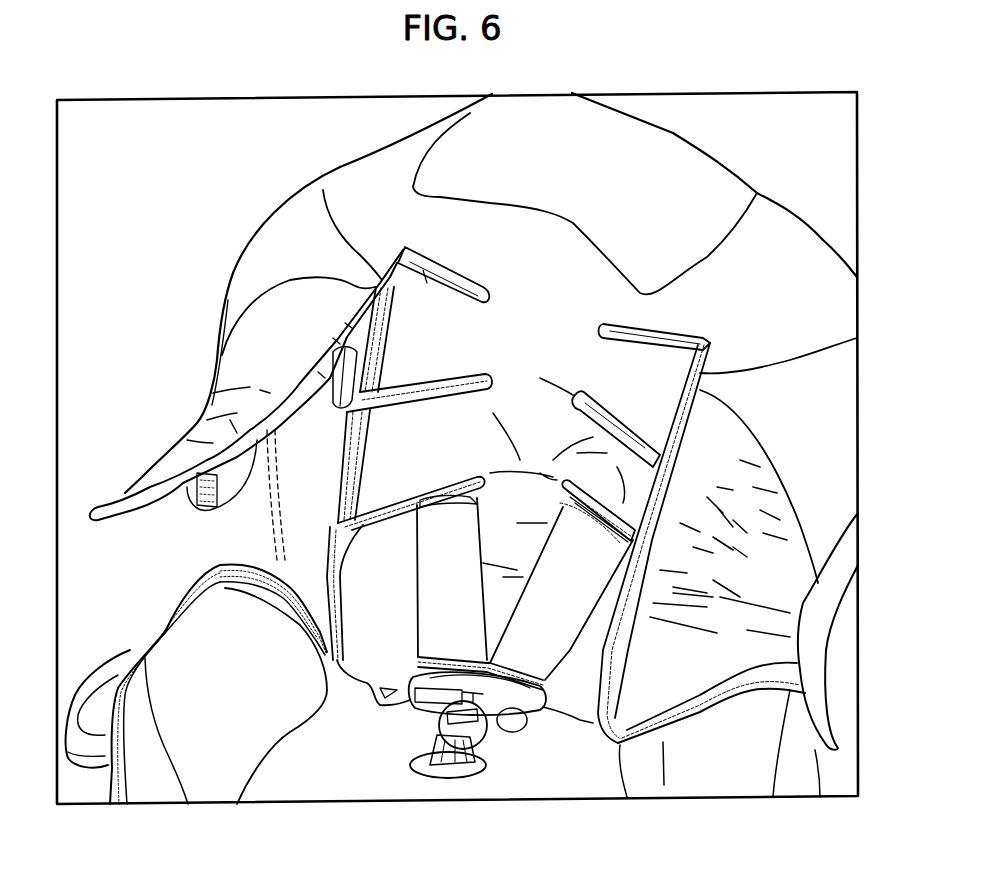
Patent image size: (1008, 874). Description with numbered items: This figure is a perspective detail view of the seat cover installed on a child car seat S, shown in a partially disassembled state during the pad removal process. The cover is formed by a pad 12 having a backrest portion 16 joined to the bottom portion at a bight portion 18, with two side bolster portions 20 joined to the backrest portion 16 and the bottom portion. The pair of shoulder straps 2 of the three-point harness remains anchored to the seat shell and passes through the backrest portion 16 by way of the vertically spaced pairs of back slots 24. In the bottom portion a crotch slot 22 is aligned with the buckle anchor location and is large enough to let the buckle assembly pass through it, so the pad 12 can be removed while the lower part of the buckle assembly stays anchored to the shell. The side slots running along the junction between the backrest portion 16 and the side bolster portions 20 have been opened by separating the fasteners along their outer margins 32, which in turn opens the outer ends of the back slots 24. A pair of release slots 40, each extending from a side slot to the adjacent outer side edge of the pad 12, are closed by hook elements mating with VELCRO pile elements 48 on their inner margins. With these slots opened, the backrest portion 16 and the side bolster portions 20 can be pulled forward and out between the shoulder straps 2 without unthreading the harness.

The pad 12 is at (390, 170).
The side bolster portions 20 is at (247, 257).
The VELCRO pile elements 48 is at (238, 562).
The child car seat S is at (282, 493).
The outer margins 32 is at (300, 380).
The back slots 24 is at (457, 283).
The backrest portion 16 is at (578, 300).
The shoulder straps 2 is at (451, 586).
The bight portion 18 is at (368, 713).
The crotch slot 22 is at (488, 770).
The release slots 40 is at (718, 703).